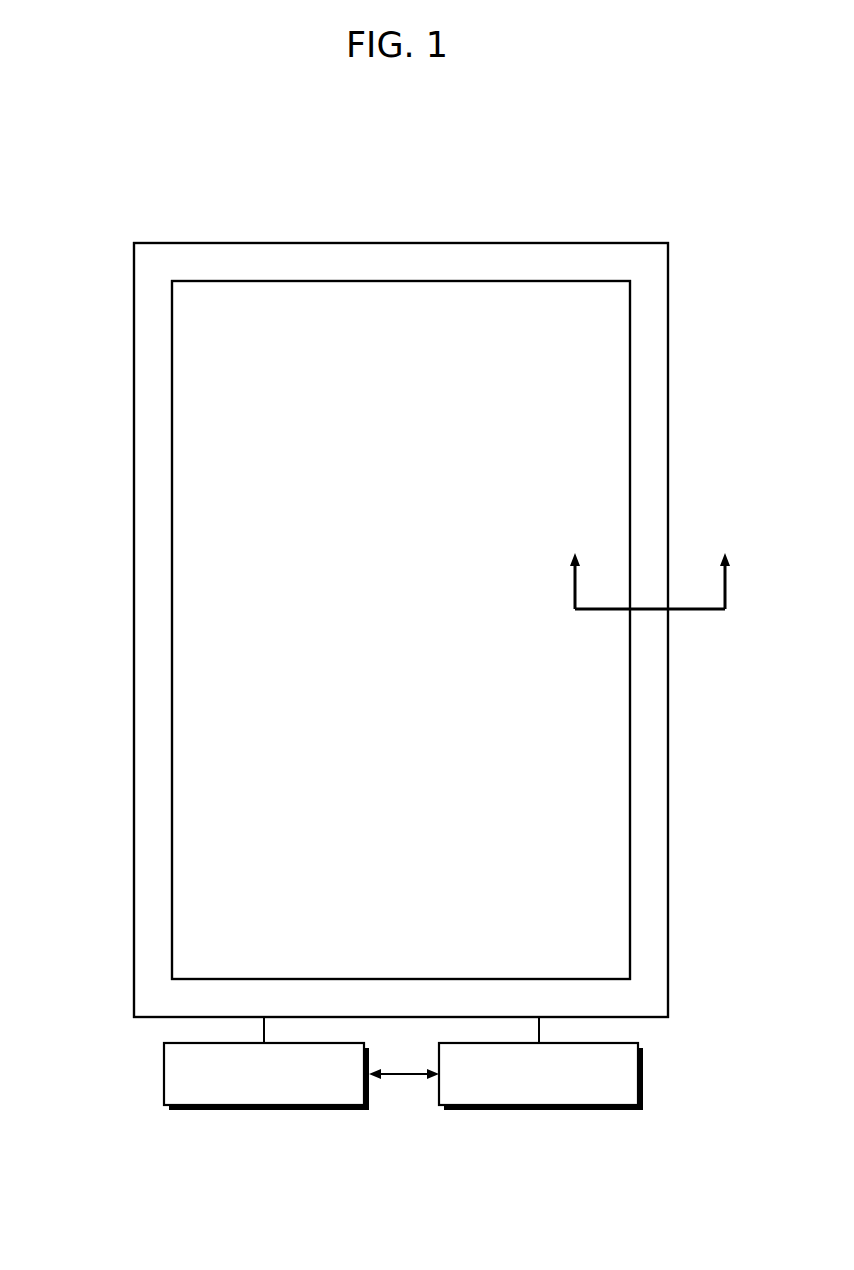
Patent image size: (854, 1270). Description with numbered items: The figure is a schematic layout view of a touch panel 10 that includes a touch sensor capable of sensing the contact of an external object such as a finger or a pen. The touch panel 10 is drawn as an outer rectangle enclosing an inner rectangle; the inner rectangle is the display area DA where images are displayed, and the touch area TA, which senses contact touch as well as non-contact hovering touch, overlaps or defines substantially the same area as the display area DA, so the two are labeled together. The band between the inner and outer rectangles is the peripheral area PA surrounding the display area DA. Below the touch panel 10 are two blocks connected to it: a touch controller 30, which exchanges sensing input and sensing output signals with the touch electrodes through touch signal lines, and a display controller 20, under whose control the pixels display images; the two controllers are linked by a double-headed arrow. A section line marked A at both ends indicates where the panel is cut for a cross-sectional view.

The touch panel 10 is at (669, 379).
The display controller 20 is at (643, 1075).
The touch controller 30 is at (164, 1071).
The display area DA is at (195, 352).
The touch area TA is at (401, 630).
The peripheral area PA is at (156, 413).
The section line A- A is at (649, 568).